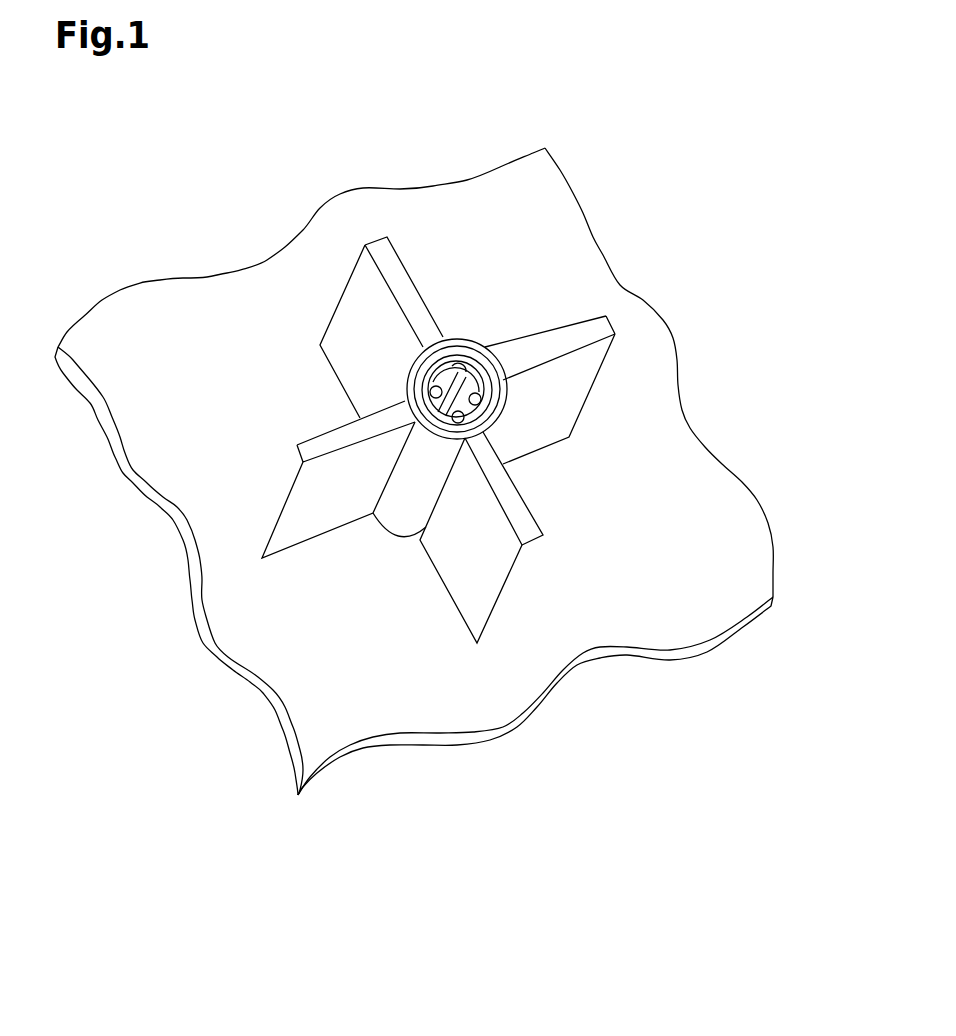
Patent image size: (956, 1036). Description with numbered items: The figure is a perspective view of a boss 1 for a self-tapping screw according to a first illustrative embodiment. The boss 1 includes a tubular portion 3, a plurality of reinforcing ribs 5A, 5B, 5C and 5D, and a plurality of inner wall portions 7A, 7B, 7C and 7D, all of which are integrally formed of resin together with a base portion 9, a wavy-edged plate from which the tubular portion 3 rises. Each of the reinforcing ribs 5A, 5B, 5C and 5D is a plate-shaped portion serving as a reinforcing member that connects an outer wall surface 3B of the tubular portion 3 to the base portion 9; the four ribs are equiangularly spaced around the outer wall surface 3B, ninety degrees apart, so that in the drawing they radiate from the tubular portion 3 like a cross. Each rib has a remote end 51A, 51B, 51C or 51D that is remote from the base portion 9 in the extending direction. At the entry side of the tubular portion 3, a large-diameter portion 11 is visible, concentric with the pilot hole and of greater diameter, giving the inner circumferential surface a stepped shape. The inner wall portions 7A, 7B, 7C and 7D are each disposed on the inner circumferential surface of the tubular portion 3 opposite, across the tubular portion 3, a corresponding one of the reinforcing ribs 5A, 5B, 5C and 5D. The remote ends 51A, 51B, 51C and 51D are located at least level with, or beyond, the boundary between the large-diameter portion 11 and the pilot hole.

The boss 1 is at (489, 325).
The tubular portion 3 is at (419, 539).
The outer wall surface 3B is at (362, 575).
The reinforcing rib 5A is at (626, 352).
The reinforcing rib 5B is at (533, 603).
The reinforcing rib 5C is at (266, 527).
The reinforcing rib 5D is at (344, 268).
The remote end 51A is at (578, 332).
The remote end 51B is at (522, 508).
The remote end 51C is at (326, 440).
The remote end 51D is at (390, 258).
The inner wall portion 7A is at (470, 408).
The inner wall portion 7B is at (457, 400).
The inner wall portion 7C is at (425, 378).
The inner wall portion 7D is at (472, 377).
The base portion 9 is at (678, 613).
The large-diameter portion 11 is at (472, 357).